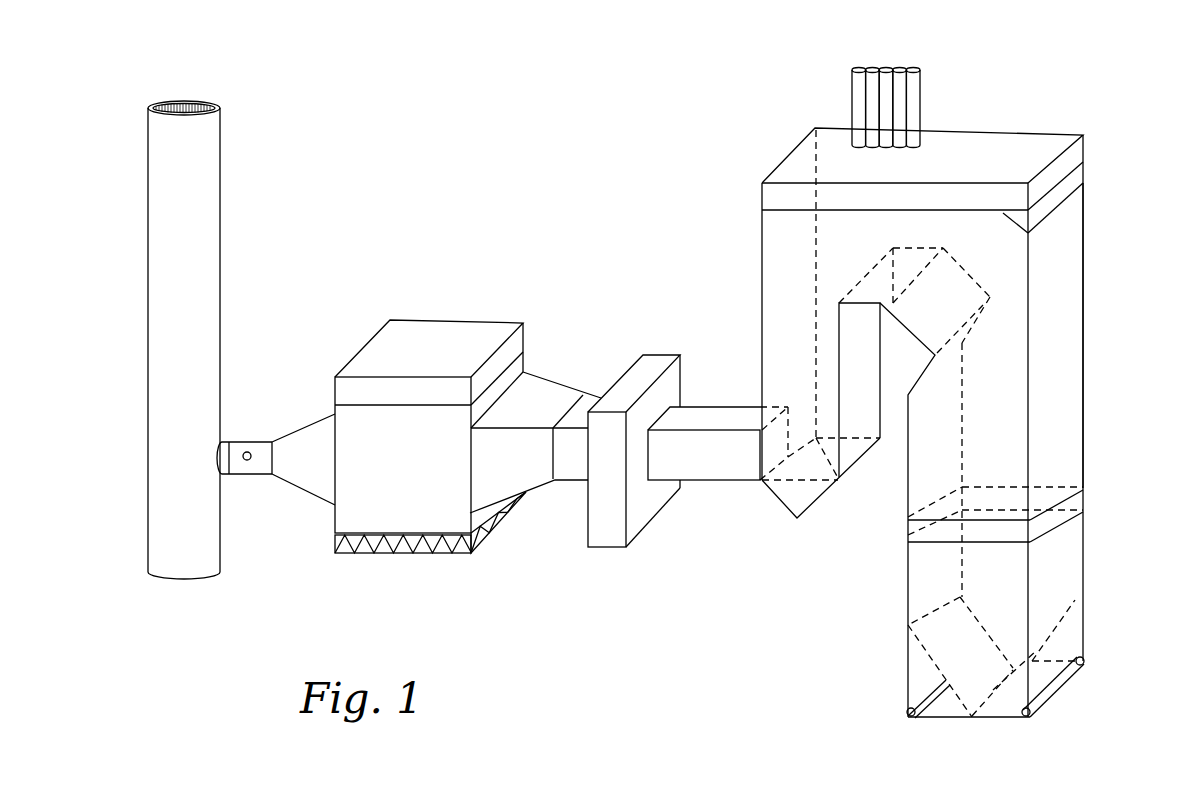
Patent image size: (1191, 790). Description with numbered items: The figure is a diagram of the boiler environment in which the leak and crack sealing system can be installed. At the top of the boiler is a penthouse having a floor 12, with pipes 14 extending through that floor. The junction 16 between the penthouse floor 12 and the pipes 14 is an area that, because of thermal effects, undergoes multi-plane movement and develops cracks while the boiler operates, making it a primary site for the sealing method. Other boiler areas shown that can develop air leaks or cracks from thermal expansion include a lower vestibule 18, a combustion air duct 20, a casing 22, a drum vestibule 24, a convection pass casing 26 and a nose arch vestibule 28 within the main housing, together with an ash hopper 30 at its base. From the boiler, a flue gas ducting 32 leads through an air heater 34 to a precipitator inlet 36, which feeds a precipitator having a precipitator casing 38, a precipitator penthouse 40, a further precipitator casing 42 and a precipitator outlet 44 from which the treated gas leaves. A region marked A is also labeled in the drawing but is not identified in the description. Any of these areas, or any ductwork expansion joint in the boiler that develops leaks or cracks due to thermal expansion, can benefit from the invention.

The floor 12 is at (1020, 143).
The pipes 14 is at (912, 93).
The junction 16 is at (925, 133).
The lower vestibule 18 is at (1080, 622).
The combustion air duct 20 is at (1073, 502).
The casing 22 is at (1065, 305).
The drum vestibule 24 is at (1077, 184).
The convection pass casing 26 is at (775, 273).
The nose arch vestibule 28 is at (928, 313).
The ash hopper 30 is at (797, 520).
The flue gas ducting 32 is at (717, 473).
The air heater 34 is at (600, 538).
The precipitator inlet 36 is at (565, 472).
The precipitator casing 38 is at (320, 528).
The precipitator penthouse 40 is at (466, 327).
The precipitator casing 42 is at (437, 545).
The precipitator outlet 44 is at (265, 437).
The filter panel A is at (993, 657).